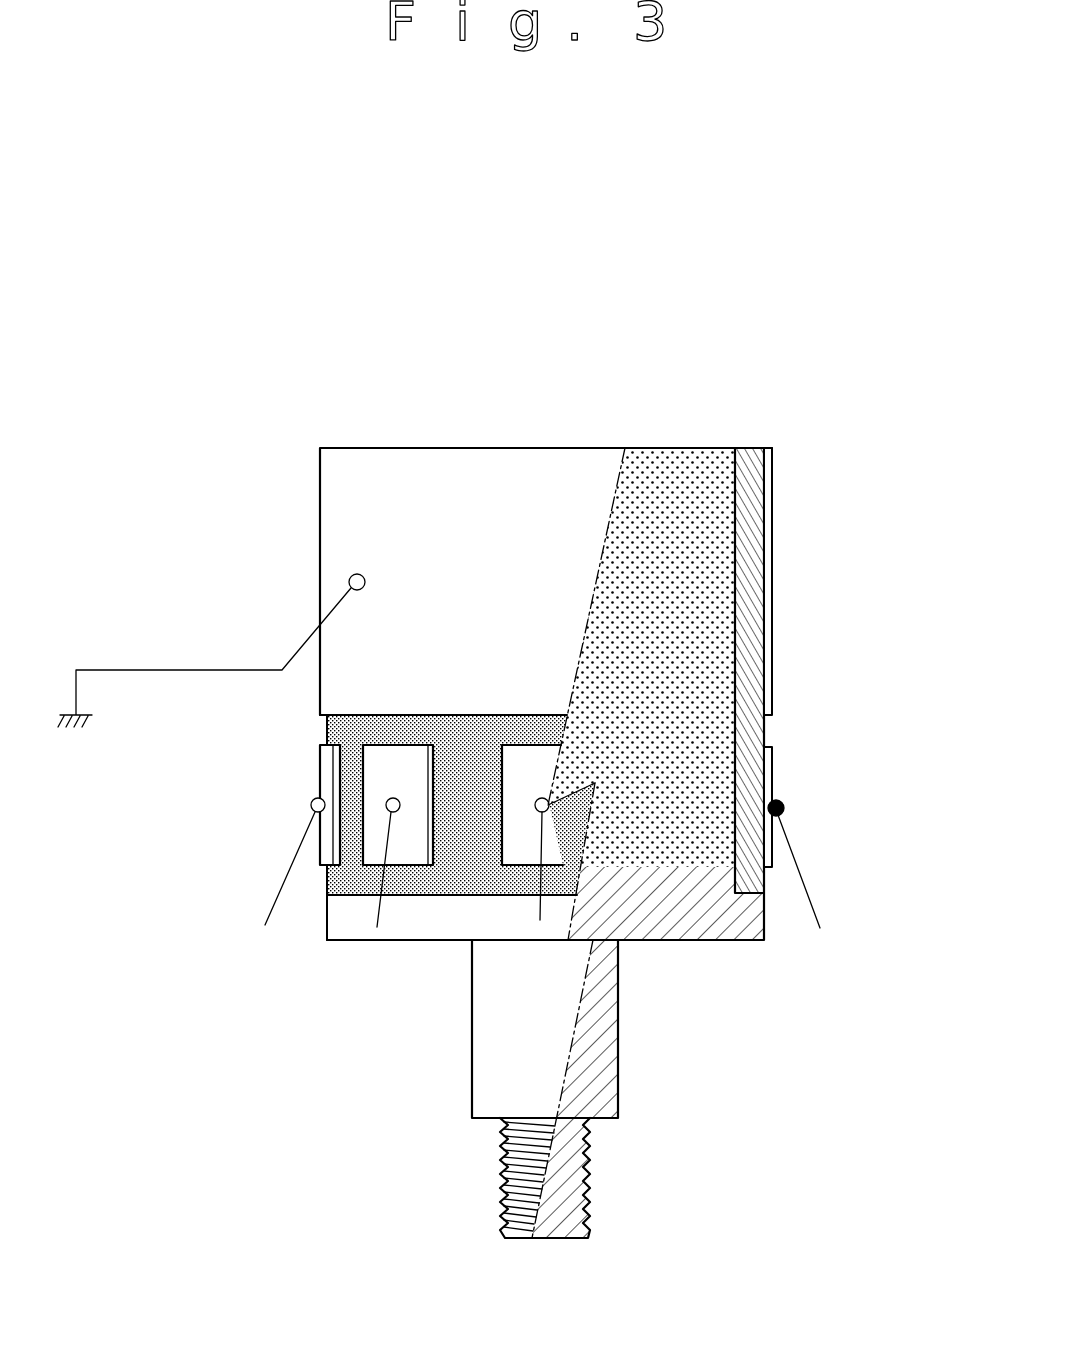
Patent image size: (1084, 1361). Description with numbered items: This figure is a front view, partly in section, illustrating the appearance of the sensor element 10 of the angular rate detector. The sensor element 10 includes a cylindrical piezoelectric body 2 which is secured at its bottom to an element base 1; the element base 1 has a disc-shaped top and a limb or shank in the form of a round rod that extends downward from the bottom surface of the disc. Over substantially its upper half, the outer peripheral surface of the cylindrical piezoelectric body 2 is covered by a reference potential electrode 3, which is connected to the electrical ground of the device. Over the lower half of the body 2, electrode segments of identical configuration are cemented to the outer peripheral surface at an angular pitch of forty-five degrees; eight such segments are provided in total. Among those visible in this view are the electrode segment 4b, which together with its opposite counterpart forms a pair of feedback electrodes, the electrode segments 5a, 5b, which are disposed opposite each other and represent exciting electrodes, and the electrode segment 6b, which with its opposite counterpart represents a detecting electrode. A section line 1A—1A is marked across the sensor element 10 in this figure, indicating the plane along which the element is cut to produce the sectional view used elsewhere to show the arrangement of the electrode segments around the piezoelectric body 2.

The sensor element 10 is at (563, 427).
The element base 1 is at (673, 910).
The cylindrical piezoelectric body 2 is at (750, 577).
The reference potential electrode 3 is at (772, 508).
The electrode segment 4b is at (540, 763).
The electrode segment 5a is at (775, 762).
The electrode segment 5b is at (328, 765).
The electrode segment 6b is at (399, 846).
The section line 1A is at (320, 732).